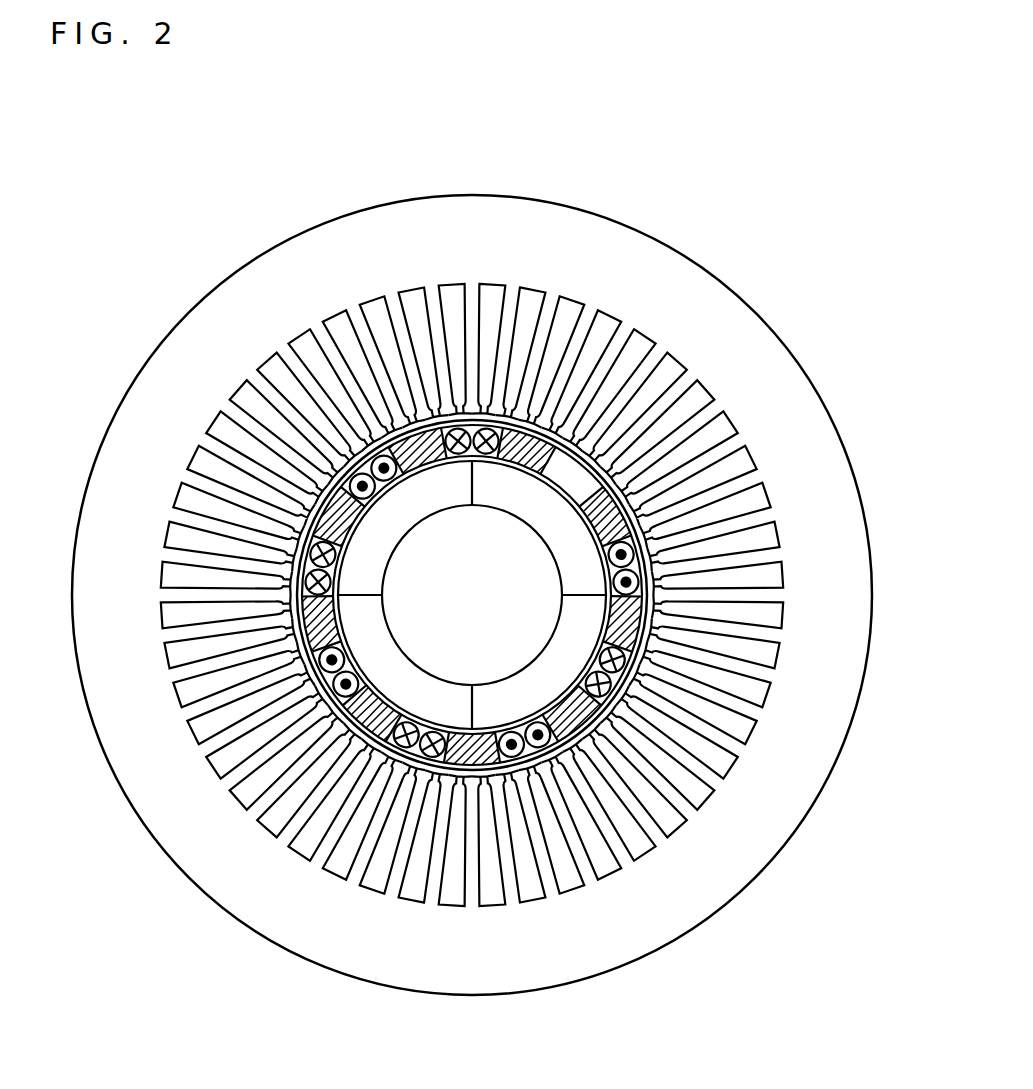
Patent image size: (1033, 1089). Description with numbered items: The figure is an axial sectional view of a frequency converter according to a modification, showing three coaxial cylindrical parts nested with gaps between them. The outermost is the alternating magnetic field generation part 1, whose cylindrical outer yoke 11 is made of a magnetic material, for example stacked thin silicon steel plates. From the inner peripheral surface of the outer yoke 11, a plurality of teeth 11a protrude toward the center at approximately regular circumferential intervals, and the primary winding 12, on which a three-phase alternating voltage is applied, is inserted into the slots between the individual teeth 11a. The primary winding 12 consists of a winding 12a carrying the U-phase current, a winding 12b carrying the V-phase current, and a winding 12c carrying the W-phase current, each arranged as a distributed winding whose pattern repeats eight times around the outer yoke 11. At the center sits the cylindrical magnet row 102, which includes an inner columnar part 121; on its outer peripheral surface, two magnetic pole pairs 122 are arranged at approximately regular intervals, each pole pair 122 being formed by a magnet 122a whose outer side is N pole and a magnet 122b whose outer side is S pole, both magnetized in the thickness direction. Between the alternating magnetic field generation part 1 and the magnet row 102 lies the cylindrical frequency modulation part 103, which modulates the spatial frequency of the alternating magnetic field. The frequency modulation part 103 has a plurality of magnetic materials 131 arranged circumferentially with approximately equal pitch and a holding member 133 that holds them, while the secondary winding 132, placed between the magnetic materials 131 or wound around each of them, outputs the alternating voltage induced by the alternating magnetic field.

The alternating magnetic field generation part 1 is at (512, 188).
The outer yoke 11 is at (545, 228).
The teeth 11a is at (737, 440).
The primary winding 12 is at (838, 162).
The winding 12a is at (598, 332).
The winding 12b is at (642, 355).
The winding 12c is at (675, 372).
The magnet row 102 is at (365, 548).
The frequency modulation part 103 is at (472, 739).
The inner columnar part 121 is at (417, 558).
The magnetic pole pairs 122 is at (470, 126).
The magnet 122a is at (512, 487).
The magnet 122b is at (436, 488).
The magnetic materials 131 is at (572, 722).
The secondary winding 132 is at (513, 750).
The holding member 133 is at (615, 668).